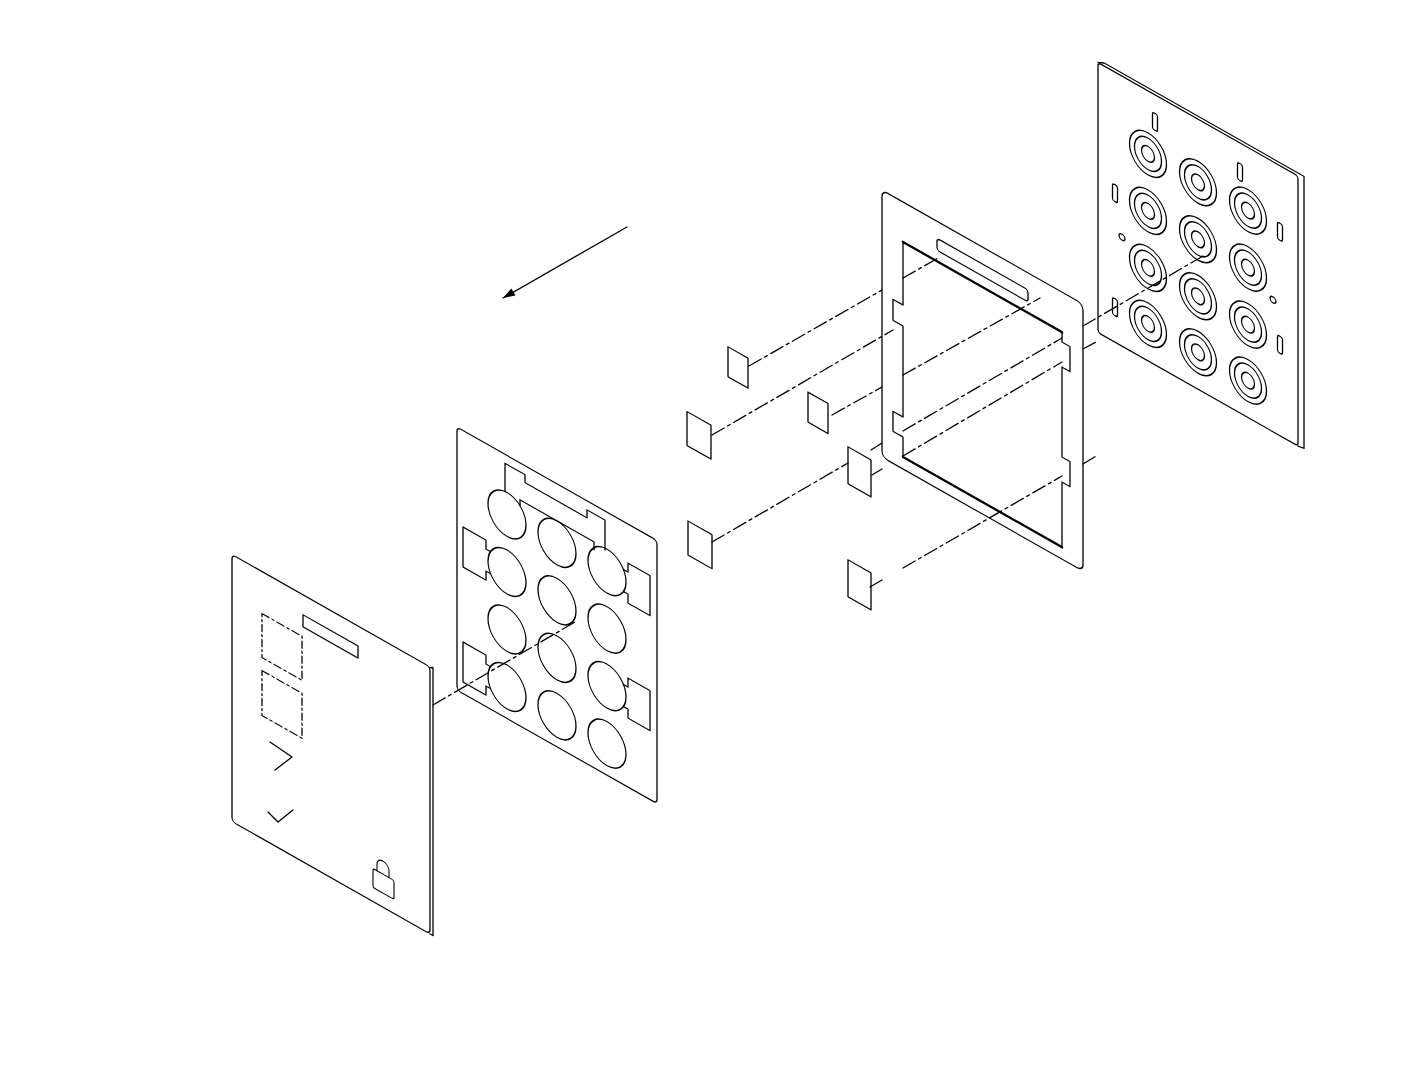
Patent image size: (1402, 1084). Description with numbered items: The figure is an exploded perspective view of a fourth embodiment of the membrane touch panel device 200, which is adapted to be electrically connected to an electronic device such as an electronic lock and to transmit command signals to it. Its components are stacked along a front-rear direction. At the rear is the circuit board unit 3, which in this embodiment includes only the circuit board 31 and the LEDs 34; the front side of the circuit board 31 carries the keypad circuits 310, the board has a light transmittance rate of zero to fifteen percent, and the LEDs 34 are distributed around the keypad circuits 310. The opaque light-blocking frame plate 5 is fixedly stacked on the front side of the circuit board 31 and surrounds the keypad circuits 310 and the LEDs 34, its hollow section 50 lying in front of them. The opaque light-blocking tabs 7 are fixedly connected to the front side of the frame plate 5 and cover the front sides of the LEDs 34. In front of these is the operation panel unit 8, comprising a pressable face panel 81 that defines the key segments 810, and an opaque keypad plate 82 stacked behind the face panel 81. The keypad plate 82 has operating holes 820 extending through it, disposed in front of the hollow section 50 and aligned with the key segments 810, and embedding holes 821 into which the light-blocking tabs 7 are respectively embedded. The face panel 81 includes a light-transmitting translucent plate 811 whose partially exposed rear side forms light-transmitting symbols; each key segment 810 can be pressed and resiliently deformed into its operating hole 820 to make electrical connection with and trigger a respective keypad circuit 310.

The membrane touch panel device 200 is at (310, 462).
The circuit board unit 3 is at (1243, 129).
The circuit board 31 is at (1307, 183).
The LEDs 34 is at (1248, 172).
The keypad circuits 310 is at (1130, 140).
The opaque light-blocking frame plate 5 is at (875, 212).
The hollow section 50 is at (955, 310).
The opaque light-blocking tabs 7 is at (697, 428).
The operation panel unit 8 is at (222, 770).
The face panel 81 is at (232, 603).
The key segments 810 is at (253, 650).
The light-transmitting translucent plate 811 is at (248, 812).
The opaque keypad plate 82 is at (458, 432).
The operating holes 820 is at (502, 505).
The embedding holes 821 is at (470, 547).